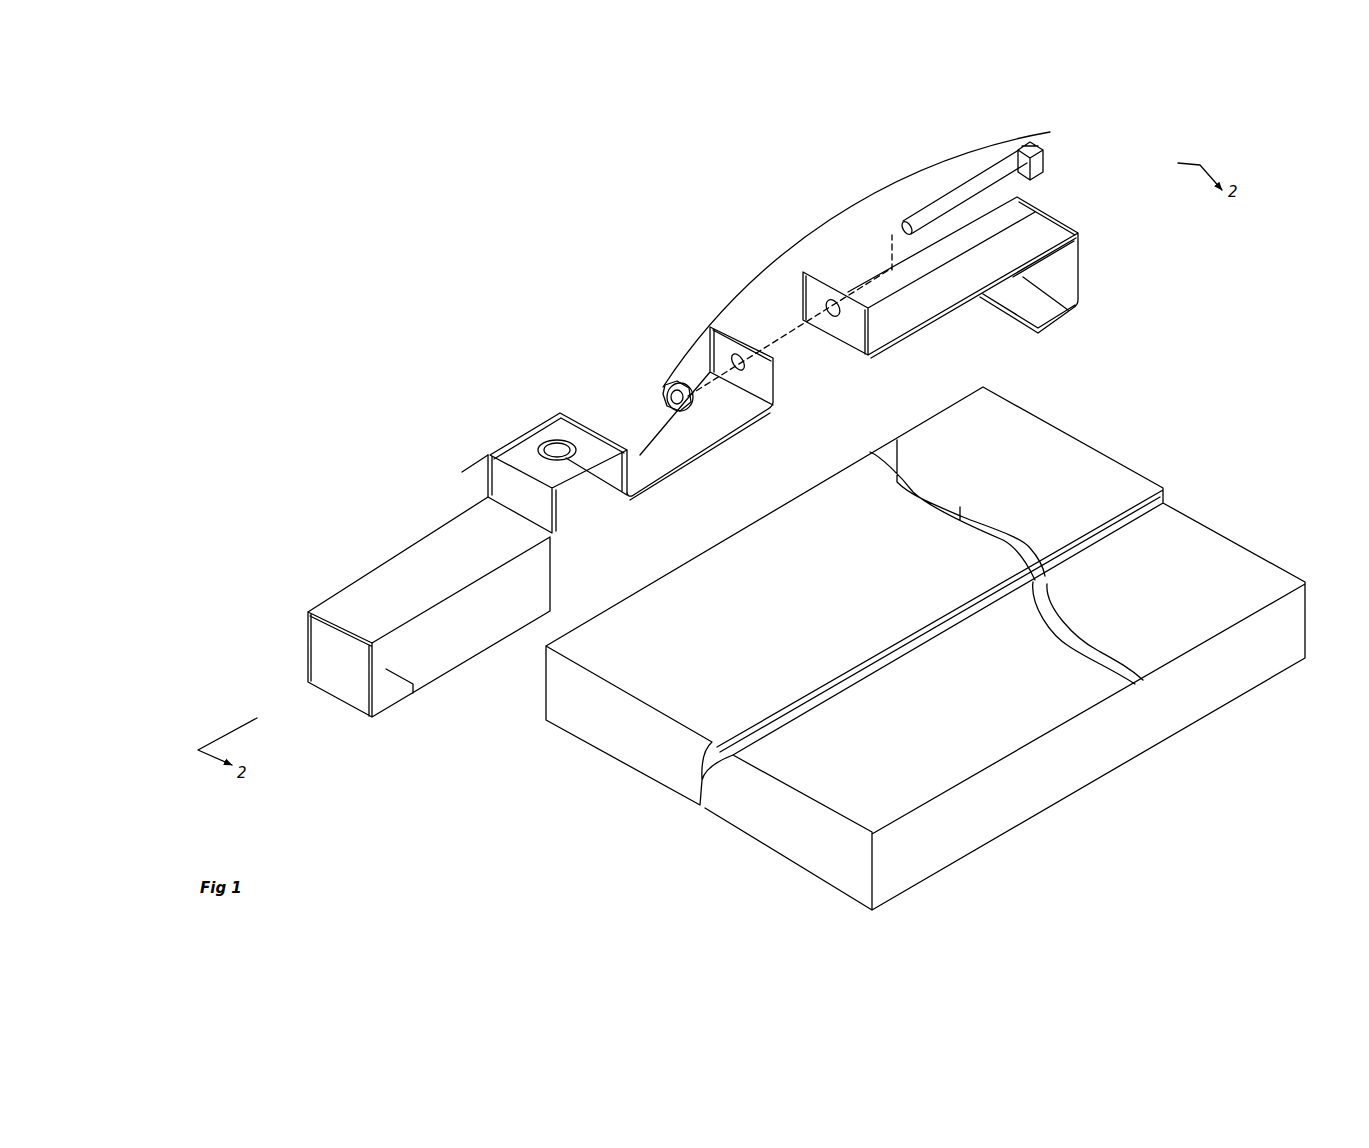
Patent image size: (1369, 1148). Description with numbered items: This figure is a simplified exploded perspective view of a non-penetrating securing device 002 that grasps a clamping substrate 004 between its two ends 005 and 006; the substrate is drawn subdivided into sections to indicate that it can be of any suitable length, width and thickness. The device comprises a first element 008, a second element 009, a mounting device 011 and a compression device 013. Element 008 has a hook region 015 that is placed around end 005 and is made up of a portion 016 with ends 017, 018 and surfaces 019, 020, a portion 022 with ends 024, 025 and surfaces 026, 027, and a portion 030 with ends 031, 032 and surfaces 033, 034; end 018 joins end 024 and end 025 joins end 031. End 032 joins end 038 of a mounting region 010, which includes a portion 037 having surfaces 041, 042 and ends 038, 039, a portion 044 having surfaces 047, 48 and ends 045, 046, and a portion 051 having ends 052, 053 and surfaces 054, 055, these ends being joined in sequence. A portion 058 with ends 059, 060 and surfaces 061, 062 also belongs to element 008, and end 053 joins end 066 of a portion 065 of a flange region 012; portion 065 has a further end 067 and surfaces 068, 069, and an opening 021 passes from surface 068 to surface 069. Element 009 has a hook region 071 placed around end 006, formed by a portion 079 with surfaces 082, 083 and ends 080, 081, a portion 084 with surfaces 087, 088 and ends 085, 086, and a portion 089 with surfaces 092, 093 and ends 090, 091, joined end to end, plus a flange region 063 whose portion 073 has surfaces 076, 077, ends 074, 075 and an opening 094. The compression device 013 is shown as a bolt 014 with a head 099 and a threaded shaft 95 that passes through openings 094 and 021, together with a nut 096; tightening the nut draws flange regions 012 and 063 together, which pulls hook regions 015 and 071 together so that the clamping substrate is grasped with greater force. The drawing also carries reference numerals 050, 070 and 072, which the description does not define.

The non-penetrating securing device 002 is at (410, 160).
The clamping substrate 004 is at (922, 648).
The end of clamping substrate 005 is at (635, 690).
The end of clamping substrate 006 is at (1070, 447).
The element 008 is at (282, 305).
The element 009 is at (970, 107).
The mounting region 010 is at (462, 297).
The mounting device 011 is at (547, 437).
The flange region 012 is at (703, 263).
The compression device 013 is at (850, 227).
The bolt 014 is at (1008, 161).
The hook region 015 is at (309, 704).
The portion 016 is at (416, 718).
The end 017 is at (398, 677).
The end 018 is at (382, 724).
The surface 019 is at (384, 686).
The surface 020 is at (406, 706).
The opening 021 is at (735, 372).
The portion 022 is at (272, 653).
The end 024 is at (313, 693).
The end 025 is at (320, 630).
The surface 026 is at (364, 703).
The surface 027 is at (384, 658).
The portion 030 is at (362, 508).
The end 031 is at (338, 608).
The end 032 is at (495, 517).
The surface 033 is at (371, 580).
The surface 034 is at (462, 601).
The portion 037 is at (446, 489).
The end 038 is at (493, 502).
The end 039 is at (555, 518).
The surface 041 is at (548, 540).
The surface 042 is at (537, 497).
The portion 044 is at (497, 420).
The end 045 is at (512, 450).
The end 046 is at (547, 437).
The surface 047 is at (534, 438).
The surface 48 is at (573, 490).
The Z-bracket 050 is at (704, 357).
The portion 051 is at (580, 415).
The end 052 is at (577, 415).
The end 053 is at (633, 503).
The surface 054 is at (628, 457).
The surface 055 is at (613, 480).
The portion 058 is at (655, 360).
The end 059 is at (637, 463).
The end 060 is at (757, 410).
The surface 061 is at (707, 430).
The surface 062 is at (708, 458).
The flange region 063 is at (763, 215).
The portion 065 is at (736, 326).
The end 066 is at (765, 398).
The end 067 is at (675, 385).
The surface 068 is at (760, 383).
The surface 069 is at (778, 363).
The channel bracket 070 is at (990, 305).
The hook region 071 is at (1112, 325).
The lower edge 072 is at (856, 362).
The portion 073 is at (848, 284).
The end 074 is at (797, 283).
The end 075 is at (848, 357).
The surface 076 is at (817, 287).
The surface 077 is at (875, 312).
The portion 079 is at (910, 342).
The end 080 is at (860, 322).
The end 081 is at (1047, 229).
The surface 082 is at (962, 272).
The surface 083 is at (957, 318).
The portion 084 is at (1090, 278).
The end 085 is at (1062, 213).
The end 086 is at (1088, 297).
The surface 087 is at (1085, 236).
The surface 088 is at (1066, 267).
The portion 089 is at (1058, 330).
The end 090 is at (1042, 338).
The end 091 is at (1084, 322).
The surface 092 is at (1013, 295).
The surface 093 is at (993, 318).
The opening 094 is at (842, 328).
The threaded shaft 95 is at (942, 193).
The nut 096 is at (718, 335).
The head 099 is at (1050, 148).